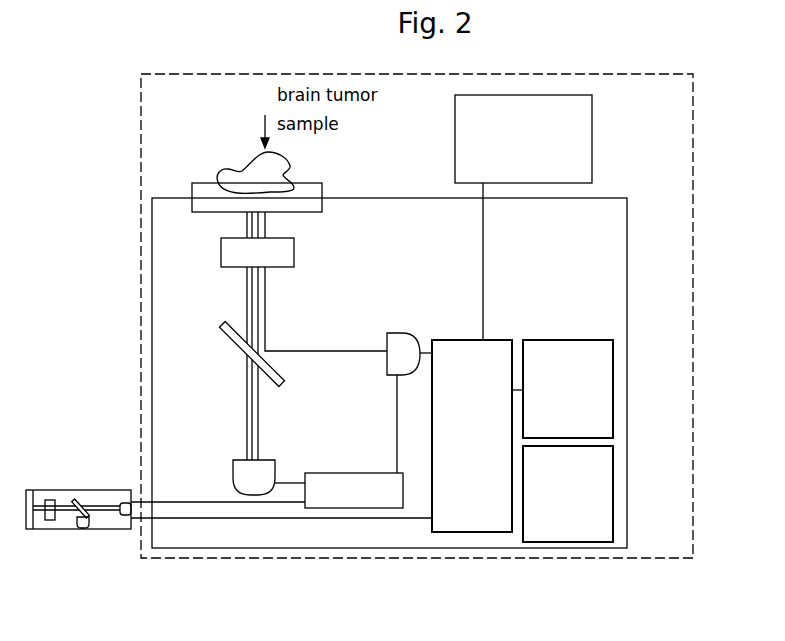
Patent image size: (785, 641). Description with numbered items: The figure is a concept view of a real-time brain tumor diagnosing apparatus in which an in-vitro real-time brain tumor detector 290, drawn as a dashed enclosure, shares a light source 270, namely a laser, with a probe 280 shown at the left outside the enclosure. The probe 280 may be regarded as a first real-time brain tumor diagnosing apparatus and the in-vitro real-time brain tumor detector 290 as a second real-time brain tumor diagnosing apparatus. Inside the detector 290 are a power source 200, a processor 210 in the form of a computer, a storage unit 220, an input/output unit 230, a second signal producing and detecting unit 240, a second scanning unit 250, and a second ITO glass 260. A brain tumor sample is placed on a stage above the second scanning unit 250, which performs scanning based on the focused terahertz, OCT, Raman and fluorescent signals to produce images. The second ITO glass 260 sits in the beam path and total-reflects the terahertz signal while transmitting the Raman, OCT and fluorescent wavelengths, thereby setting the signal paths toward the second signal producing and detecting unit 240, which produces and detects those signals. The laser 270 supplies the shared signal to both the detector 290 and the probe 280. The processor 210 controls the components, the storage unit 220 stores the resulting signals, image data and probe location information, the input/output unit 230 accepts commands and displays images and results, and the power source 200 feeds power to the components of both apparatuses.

The power source 200 is at (553, 542).
The processor 210 is at (468, 532).
The storage unit 220 is at (553, 340).
The input/output unit 230 is at (527, 95).
The second signal producing and detecting unit 240 is at (398, 333).
The second scanning unit 250 is at (294, 250).
The second ITO glass 260 is at (226, 331).
The light source 270 is at (338, 473).
The probe 280 is at (65, 490).
The in-vitro real-time brain tumor detector 290 is at (141, 166).